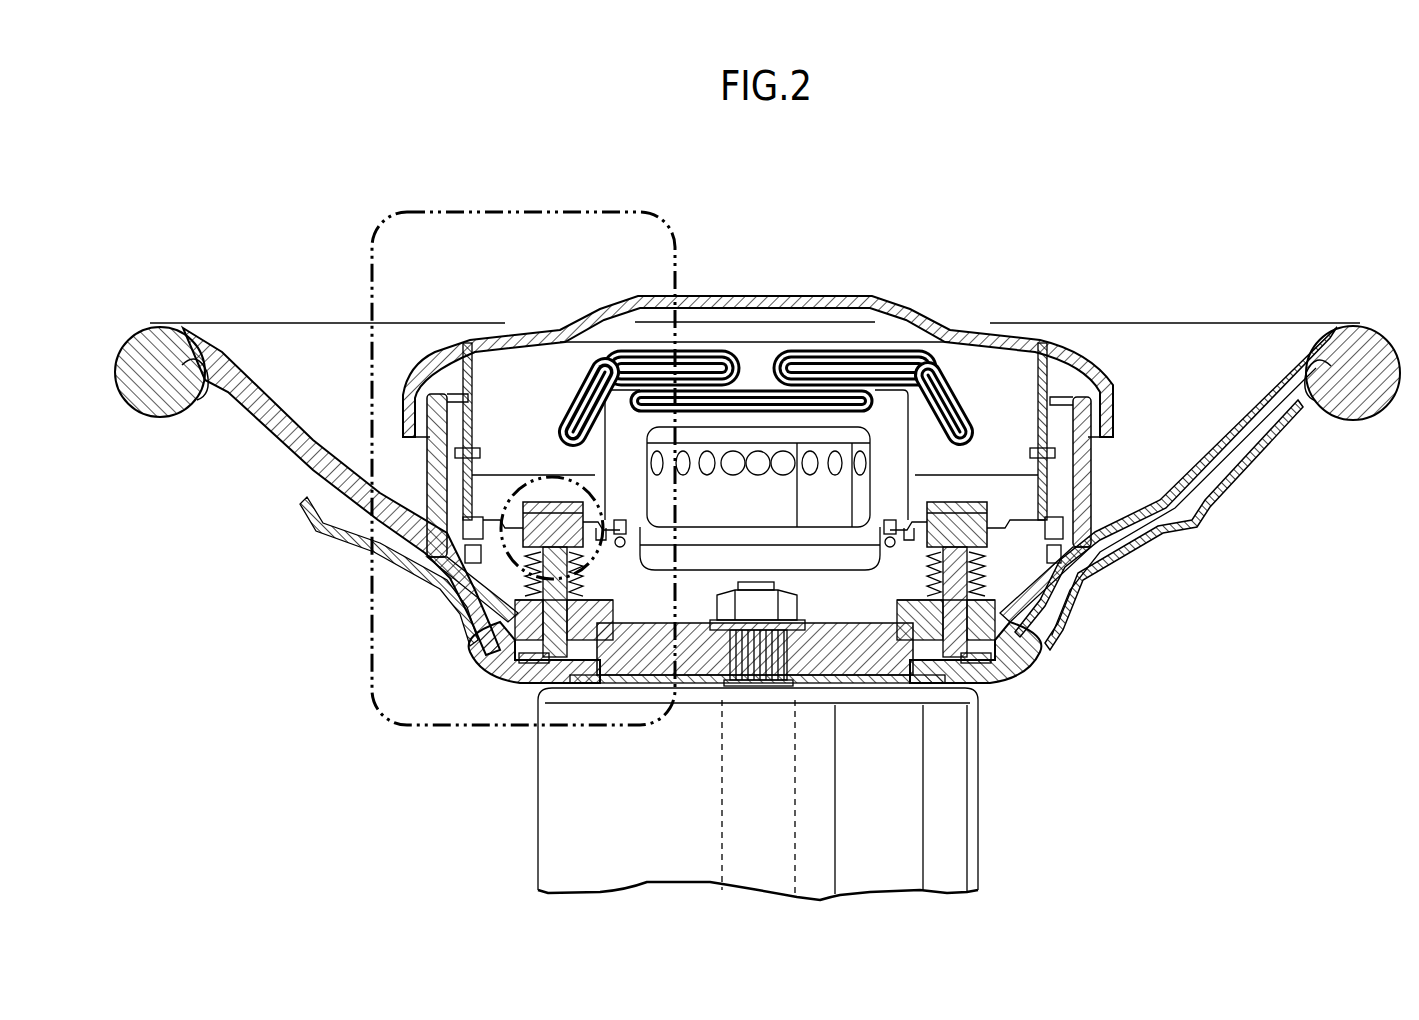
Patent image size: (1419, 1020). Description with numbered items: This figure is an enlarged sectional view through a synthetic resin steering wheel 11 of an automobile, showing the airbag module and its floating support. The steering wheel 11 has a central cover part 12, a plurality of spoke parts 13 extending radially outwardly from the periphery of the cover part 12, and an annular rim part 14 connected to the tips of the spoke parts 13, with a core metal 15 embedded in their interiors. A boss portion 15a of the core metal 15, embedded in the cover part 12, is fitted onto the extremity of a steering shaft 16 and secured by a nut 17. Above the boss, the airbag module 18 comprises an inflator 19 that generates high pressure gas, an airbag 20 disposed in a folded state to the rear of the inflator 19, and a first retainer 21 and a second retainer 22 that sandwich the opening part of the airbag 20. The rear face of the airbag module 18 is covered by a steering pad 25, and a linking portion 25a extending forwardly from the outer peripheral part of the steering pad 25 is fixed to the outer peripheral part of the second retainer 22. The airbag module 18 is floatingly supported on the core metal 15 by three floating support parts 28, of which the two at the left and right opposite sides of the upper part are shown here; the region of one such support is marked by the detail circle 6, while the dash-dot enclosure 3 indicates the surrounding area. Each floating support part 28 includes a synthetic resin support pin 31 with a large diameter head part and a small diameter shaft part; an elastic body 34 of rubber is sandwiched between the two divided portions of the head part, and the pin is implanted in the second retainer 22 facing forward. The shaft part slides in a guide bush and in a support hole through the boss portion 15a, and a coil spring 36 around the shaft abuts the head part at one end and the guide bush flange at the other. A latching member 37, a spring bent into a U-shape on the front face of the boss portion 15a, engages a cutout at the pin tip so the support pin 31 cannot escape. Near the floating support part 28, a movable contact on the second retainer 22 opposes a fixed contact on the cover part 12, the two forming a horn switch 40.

The spring unit (enlarged region) 3 is at (424, 210).
The detail region 6 is at (521, 496).
The steering wheel 11 is at (1022, 282).
The cover part 12 is at (1062, 648).
The spoke parts 13 is at (350, 530).
The rim part 14 is at (182, 405).
The core metal 15 is at (458, 634).
The boss portion 15a is at (590, 666).
The steering shaft 16 is at (720, 765).
The nut 17 is at (777, 609).
The airbag module 18 is at (603, 298).
The inflator 19 is at (772, 505).
The airbag 20 is at (708, 348).
The first retainer 21 is at (624, 518).
The second retainer 22 is at (598, 508).
The steering pad 25 is at (886, 297).
The linking portion 25a is at (472, 402).
The floating support part 28 is at (549, 498).
The support pin 31 is at (585, 600).
The elastic body 34 is at (525, 526).
The coil spring 36 is at (601, 540).
The latching member 37 is at (530, 664).
The horn switch 40 is at (458, 530).